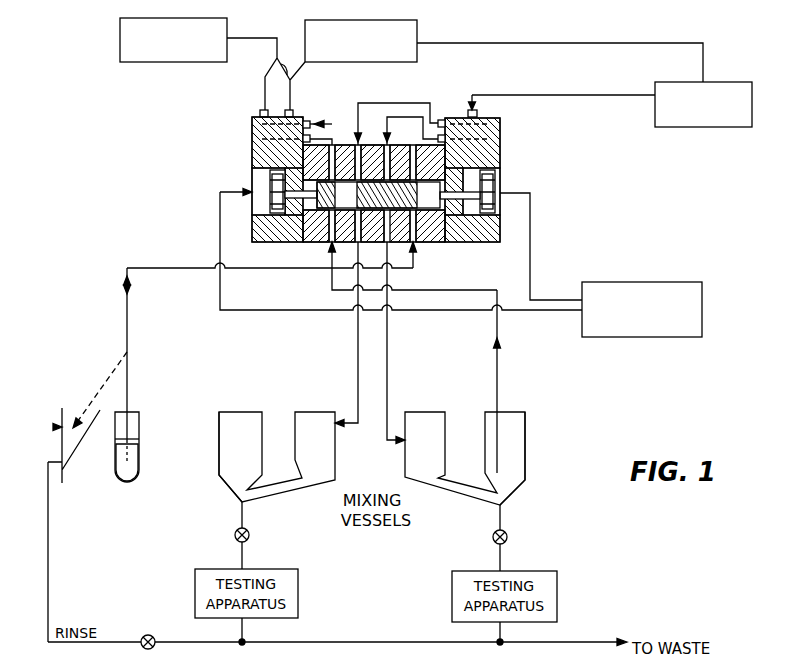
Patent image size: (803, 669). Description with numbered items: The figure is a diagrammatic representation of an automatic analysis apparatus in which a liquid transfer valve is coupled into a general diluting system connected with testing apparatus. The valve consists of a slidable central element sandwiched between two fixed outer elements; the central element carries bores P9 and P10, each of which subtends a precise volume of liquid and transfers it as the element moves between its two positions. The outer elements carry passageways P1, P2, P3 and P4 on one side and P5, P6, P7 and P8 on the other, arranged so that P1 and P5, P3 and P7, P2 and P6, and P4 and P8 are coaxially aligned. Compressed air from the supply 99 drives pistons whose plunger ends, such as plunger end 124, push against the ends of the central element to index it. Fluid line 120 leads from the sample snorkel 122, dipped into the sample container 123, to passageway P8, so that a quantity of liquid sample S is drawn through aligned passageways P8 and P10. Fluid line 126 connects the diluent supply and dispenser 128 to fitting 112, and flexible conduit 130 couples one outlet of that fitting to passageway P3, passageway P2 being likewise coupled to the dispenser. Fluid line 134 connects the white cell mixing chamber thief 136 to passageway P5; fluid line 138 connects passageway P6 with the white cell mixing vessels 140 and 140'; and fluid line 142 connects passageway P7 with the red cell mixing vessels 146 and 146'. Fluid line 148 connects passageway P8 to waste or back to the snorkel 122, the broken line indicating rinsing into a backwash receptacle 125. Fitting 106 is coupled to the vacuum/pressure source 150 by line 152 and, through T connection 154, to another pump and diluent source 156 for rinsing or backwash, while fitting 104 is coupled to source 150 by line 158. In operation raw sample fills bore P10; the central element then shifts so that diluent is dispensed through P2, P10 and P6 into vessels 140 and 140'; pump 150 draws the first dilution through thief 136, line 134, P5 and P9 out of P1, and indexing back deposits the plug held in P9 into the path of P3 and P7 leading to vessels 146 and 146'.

The compressed air supply 99 is at (702, 310).
The fitting 104 is at (260, 110).
The fitting 106 is at (292, 110).
The fitting 112 is at (472, 100).
The fluid line 120 is at (185, 268).
The sample snorkel 122 is at (127, 392).
The sample container 123 is at (139, 456).
The liquid sample S is at (132, 482).
The plunger end 124 is at (330, 124).
The backwash receptacle 125 is at (53, 427).
The fluid line 126 is at (570, 95).
The diluent supply and dispenser 128 is at (710, 127).
The flexible conduit 130 is at (395, 117).
The fluid line 134 is at (455, 290).
The white cell mixing chamber thief 136 is at (352, 110).
The fluid line 138 is at (387, 366).
The white cell mixing vessel 140 is at (465, 443).
The white cell mixing vessel 140' is at (545, 458).
The fluid line 142 is at (358, 362).
The red cell mixing vessel 146 is at (277, 441).
The red cell mixing vessel 146' is at (208, 454).
The fluid line 148 is at (101, 382).
The vacuum/pressure source 150 is at (150, 62).
The line 152 is at (299, 58).
The T connection 154 is at (277, 60).
The pump and diluent source 156 is at (417, 30).
The line 158 is at (265, 82).
The passageway P1 is at (344, 138).
The passageway P2 is at (397, 138).
The passageway P3 is at (368, 138).
The passageway P4 is at (438, 122).
The passageway P5 is at (321, 255).
The passageway P6 is at (372, 259).
The passageway P7 is at (345, 259).
The passageway P8 is at (424, 255).
The bore P9 is at (344, 200).
The bore P10 is at (428, 200).